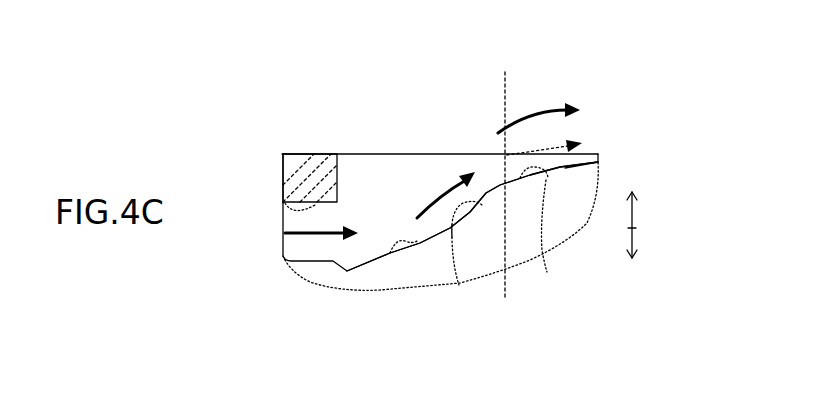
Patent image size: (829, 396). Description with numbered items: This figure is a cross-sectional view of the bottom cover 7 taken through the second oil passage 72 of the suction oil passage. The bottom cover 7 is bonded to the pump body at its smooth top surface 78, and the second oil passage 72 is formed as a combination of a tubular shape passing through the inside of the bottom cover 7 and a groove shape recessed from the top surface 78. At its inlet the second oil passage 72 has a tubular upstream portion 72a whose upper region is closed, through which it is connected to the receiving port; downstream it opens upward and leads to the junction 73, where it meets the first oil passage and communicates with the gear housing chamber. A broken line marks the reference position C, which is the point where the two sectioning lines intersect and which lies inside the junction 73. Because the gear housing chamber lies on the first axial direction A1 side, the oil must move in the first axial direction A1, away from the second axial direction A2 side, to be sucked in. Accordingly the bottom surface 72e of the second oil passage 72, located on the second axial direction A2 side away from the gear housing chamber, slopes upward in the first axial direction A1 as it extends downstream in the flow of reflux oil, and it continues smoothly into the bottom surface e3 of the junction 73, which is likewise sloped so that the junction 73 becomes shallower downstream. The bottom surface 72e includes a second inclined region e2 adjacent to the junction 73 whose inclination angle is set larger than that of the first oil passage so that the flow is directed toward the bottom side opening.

The bottom cover 7 is at (327, 298).
The second oil passage 72 is at (378, 168).
The upstream portion 72a is at (285, 201).
The bottom surface 72e is at (393, 245).
The junction 73 is at (582, 157).
The top surface 78 is at (312, 152).
The second inclined region e2 is at (459, 283).
The bottom surface of the junction e3 is at (544, 255).
The reference position C is at (503, 170).
The first axial direction A1 is at (632, 212).
The second axial direction A2 is at (632, 260).